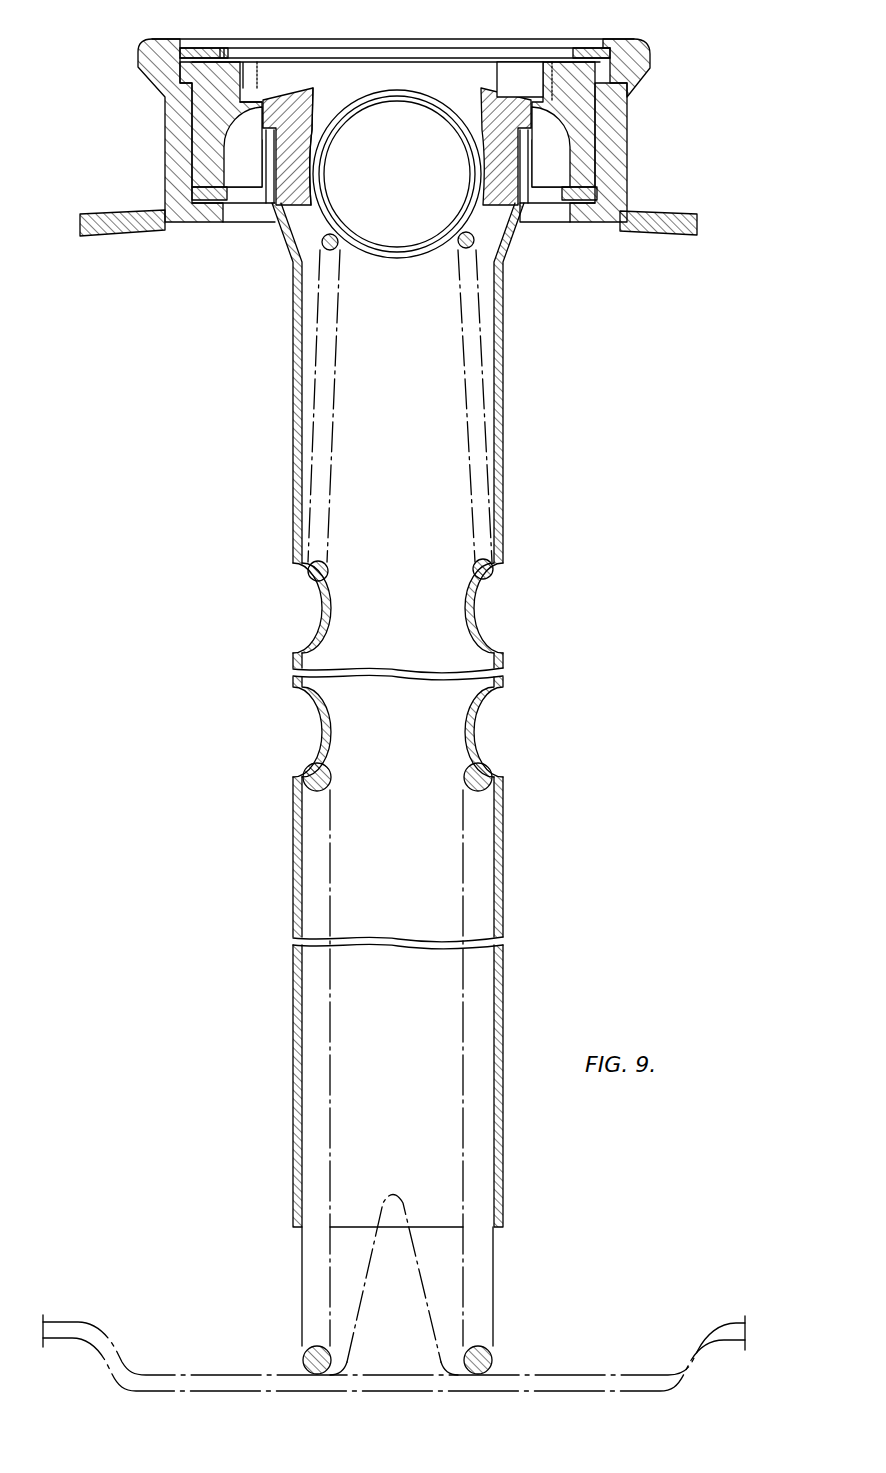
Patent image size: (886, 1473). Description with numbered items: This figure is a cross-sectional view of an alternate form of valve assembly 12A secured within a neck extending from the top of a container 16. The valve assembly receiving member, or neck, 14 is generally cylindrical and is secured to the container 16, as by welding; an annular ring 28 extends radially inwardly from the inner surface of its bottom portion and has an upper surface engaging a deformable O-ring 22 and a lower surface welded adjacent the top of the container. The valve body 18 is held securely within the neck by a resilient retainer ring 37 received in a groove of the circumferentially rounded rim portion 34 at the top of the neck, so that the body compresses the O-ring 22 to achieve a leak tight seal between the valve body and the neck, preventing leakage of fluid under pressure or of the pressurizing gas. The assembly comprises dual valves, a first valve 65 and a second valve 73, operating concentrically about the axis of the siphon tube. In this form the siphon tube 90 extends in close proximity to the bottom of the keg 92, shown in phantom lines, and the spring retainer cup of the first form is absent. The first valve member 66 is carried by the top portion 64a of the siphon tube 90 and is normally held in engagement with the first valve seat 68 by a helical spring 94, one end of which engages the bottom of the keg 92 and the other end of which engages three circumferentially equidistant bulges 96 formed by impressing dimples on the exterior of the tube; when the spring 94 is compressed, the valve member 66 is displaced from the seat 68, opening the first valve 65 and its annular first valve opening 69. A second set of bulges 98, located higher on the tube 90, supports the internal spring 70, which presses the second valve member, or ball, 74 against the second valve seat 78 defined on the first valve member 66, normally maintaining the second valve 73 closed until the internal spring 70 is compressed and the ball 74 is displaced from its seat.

The valve assembly 12A is at (518, 408).
The valve assembly receiving member 14 is at (633, 133).
The container 16 is at (694, 220).
The valve body 18 is at (213, 130).
The O-ring 22 is at (598, 193).
The annular ring 28 is at (580, 227).
The rounded rim portion 34 is at (640, 53).
The resilient retainer ring 37 is at (203, 54).
The top portion 64a is at (533, 158).
The first valve 65 is at (247, 103).
The first valve member 66 is at (297, 133).
The first valve seat 68 is at (514, 110).
The first valve opening 69 is at (257, 140).
The internal spring 70 is at (322, 240).
The second valve 73 is at (399, 103).
The second valve member 74 is at (410, 216).
The second valve seat 78 is at (313, 135).
The siphon tube 90 is at (507, 865).
The keg 92 is at (601, 1376).
The helical spring 94 is at (484, 782).
The bulges 96 is at (320, 730).
The second set of bulges 98 is at (316, 600).